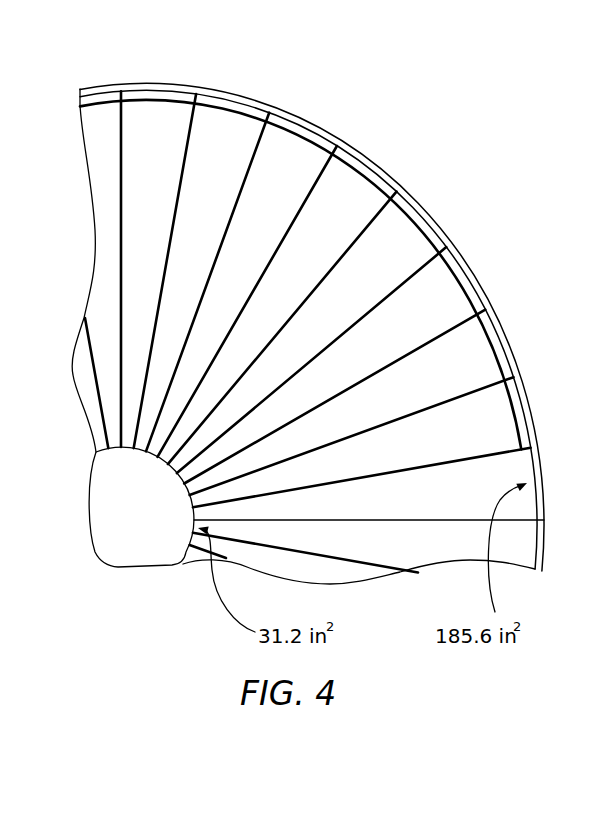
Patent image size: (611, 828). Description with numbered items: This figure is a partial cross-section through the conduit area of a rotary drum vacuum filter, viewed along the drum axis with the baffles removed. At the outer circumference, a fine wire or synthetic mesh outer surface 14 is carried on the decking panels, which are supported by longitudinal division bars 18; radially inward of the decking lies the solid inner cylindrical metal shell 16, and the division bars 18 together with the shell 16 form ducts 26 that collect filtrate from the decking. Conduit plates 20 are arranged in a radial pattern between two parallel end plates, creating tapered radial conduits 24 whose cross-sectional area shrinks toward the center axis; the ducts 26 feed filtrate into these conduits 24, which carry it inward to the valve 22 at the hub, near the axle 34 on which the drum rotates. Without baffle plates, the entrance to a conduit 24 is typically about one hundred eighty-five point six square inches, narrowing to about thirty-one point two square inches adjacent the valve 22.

The mesh outer surface 14 is at (386, 165).
The inner cylindrical metal shell 16 is at (122, 112).
The longitudinal division bars 18 is at (346, 152).
The conduit plates 20 is at (468, 380).
The valve 22 is at (141, 545).
The radial conduits 24 is at (208, 137).
The ducts 26 is at (236, 114).
The axle 34 is at (456, 502).